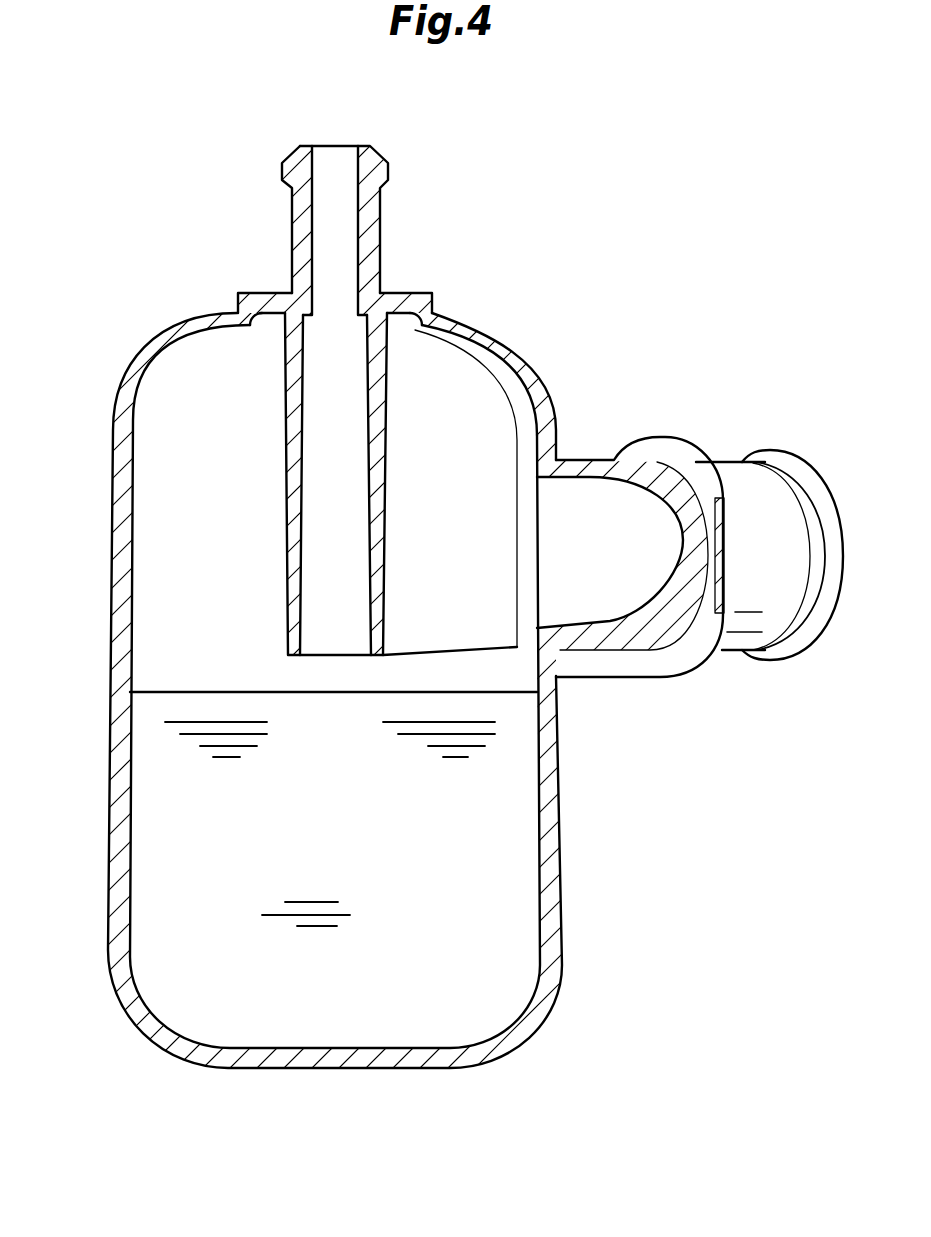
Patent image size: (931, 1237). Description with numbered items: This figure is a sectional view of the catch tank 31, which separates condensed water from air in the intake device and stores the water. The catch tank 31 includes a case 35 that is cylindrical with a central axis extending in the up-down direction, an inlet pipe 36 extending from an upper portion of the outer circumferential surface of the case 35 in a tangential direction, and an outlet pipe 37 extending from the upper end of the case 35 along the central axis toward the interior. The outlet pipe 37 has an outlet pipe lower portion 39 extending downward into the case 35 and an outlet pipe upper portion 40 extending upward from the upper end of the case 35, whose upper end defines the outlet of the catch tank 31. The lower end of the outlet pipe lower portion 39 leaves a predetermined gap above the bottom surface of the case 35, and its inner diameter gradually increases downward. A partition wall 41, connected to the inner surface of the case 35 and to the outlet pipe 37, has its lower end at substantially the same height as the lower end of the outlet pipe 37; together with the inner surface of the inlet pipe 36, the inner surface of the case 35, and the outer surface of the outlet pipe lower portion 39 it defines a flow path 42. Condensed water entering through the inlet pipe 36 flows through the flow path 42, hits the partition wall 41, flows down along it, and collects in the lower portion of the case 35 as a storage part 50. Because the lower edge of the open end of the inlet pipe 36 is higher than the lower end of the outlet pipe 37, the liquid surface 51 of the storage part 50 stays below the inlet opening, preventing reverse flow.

The catch tank 31 is at (228, 125).
The case 35 is at (112, 510).
The inlet pipe 36 is at (731, 472).
The outlet pipe 37 is at (188, 197).
The outlet pipe lower portion 39 is at (288, 580).
The outlet pipe upper portion 40 is at (300, 203).
The partition wall 41 is at (512, 365).
The flow path 42 is at (227, 503).
The storage part 50 is at (347, 813).
The liquid surface 51 is at (180, 692).